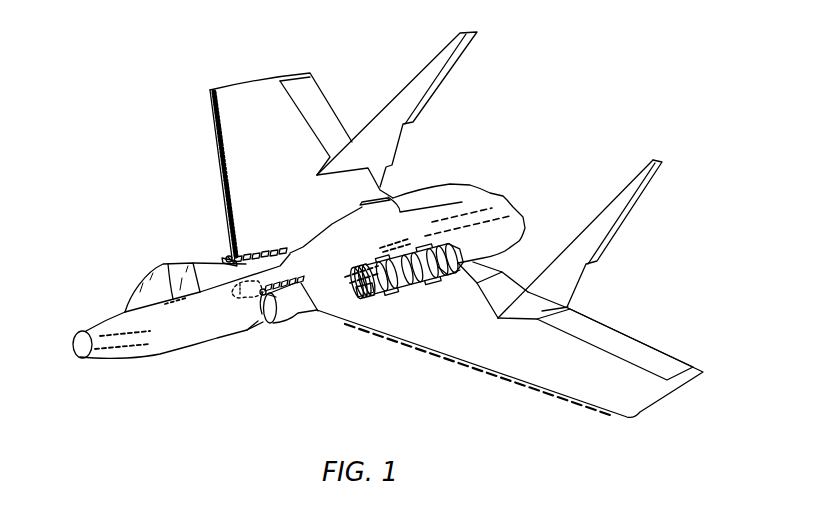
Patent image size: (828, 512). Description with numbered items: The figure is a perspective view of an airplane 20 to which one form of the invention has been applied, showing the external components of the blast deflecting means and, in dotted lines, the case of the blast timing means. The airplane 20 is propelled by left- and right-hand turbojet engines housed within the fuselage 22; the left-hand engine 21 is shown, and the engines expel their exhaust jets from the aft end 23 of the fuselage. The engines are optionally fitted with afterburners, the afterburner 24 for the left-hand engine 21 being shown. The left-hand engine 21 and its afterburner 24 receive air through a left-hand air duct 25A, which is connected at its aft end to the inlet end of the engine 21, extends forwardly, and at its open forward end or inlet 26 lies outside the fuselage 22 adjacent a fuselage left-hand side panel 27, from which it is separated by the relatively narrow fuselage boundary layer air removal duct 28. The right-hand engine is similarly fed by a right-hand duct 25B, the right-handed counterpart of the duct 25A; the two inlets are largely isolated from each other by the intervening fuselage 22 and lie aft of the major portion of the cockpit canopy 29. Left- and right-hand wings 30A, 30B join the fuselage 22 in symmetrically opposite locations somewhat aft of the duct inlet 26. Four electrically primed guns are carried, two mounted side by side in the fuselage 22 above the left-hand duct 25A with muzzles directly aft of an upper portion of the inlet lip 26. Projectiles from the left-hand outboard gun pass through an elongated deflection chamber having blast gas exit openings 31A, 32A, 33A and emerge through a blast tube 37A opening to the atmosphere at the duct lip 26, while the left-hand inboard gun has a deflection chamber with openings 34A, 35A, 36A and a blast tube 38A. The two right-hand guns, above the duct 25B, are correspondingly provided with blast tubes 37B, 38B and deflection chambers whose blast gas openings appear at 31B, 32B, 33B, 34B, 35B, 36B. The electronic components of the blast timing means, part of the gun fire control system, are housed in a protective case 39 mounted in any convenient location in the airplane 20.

The airplane 20 is at (102, 311).
The left-hand turbojet engine 21 is at (418, 256).
The fuselage 22 is at (369, 243).
The aft end 23 is at (512, 211).
The afterburner 24 is at (454, 265).
The left-hand air duct 25A is at (364, 293).
The right-hand air duct 25B is at (223, 259).
The duct inlet 26 is at (285, 321).
The fuselage left-hand side panel 27 is at (178, 333).
The fuselage boundary layer air removal duct 28 is at (258, 320).
The cockpit canopy 29 is at (167, 265).
The left-hand wing 30A is at (612, 387).
The right-hand wing 30B is at (253, 141).
The blast gas exit opening 31A is at (295, 287).
The blast gas opening 31B is at (255, 254).
The blast gas exit opening 32A is at (286, 289).
The blast gas opening 32B is at (246, 255).
The blast gas exit opening 33A is at (278, 290).
The blast gas opening 33B is at (237, 256).
The blast gas exit opening 34A is at (303, 280).
The blast gas opening 34B is at (266, 252).
The blast gas exit opening 35A is at (304, 281).
The blast gas opening 35B is at (274, 251).
The blast gas exit opening 36A is at (269, 286).
The blast gas opening 36B is at (284, 254).
The blast tube 37A is at (275, 293).
The blast tube 37B is at (227, 257).
The blast tube 38A is at (261, 305).
The blast tube 38B is at (228, 256).
The protective case 39 is at (247, 282).